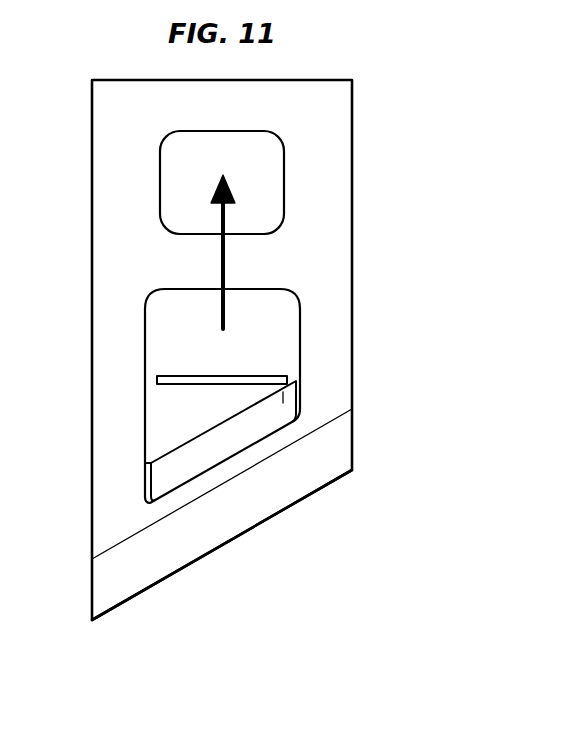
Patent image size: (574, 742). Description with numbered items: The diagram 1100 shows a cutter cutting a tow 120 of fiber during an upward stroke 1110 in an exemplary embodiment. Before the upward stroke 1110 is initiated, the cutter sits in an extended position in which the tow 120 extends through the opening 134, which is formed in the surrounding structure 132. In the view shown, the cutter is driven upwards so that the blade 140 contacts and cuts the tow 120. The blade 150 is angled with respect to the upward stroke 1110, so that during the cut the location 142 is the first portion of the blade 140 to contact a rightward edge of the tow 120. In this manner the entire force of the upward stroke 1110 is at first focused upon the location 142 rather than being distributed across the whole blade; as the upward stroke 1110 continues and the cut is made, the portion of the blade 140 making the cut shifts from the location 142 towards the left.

The housing wall 132 is at (112, 229).
The opening 134 is at (158, 346).
The tow 120 is at (270, 376).
The blade 140 is at (207, 452).
The location 142 is at (283, 403).
The blade 150 is at (297, 486).
The diagram 1100 is at (228, 580).
The upward stroke 1110 is at (223, 253).